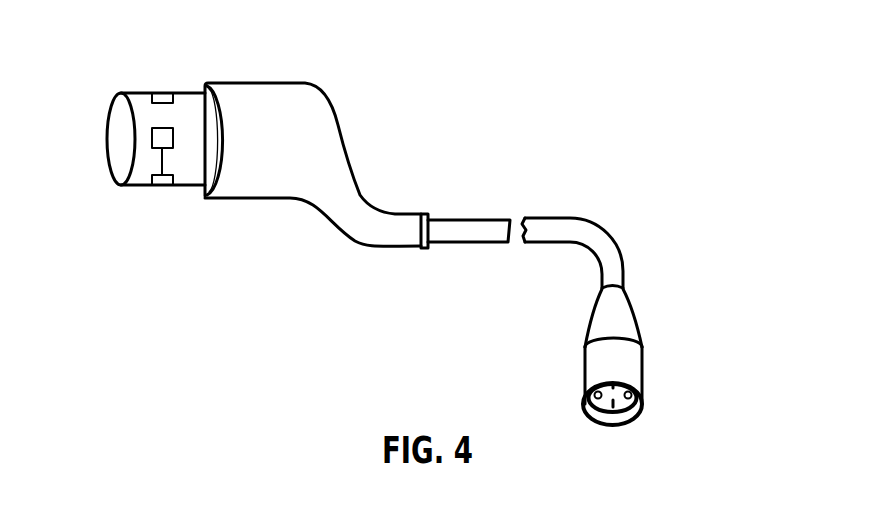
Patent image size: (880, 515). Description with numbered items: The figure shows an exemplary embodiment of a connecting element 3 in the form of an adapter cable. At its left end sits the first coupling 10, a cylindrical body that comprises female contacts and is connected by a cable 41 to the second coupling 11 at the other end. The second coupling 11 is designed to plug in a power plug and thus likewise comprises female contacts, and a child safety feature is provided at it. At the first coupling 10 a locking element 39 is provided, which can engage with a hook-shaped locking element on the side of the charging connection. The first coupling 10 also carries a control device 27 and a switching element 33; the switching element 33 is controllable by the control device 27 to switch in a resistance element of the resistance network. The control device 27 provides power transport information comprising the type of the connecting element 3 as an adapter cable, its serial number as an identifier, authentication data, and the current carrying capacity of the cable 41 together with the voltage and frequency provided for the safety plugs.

The first coupling 10 is at (104, 114).
The locking element 39 is at (160, 94).
The control device 27 is at (174, 144).
The switching element 33 is at (163, 184).
The connecting element 3 is at (345, 82).
The cable 41 is at (607, 227).
The second coupling 11 is at (687, 343).